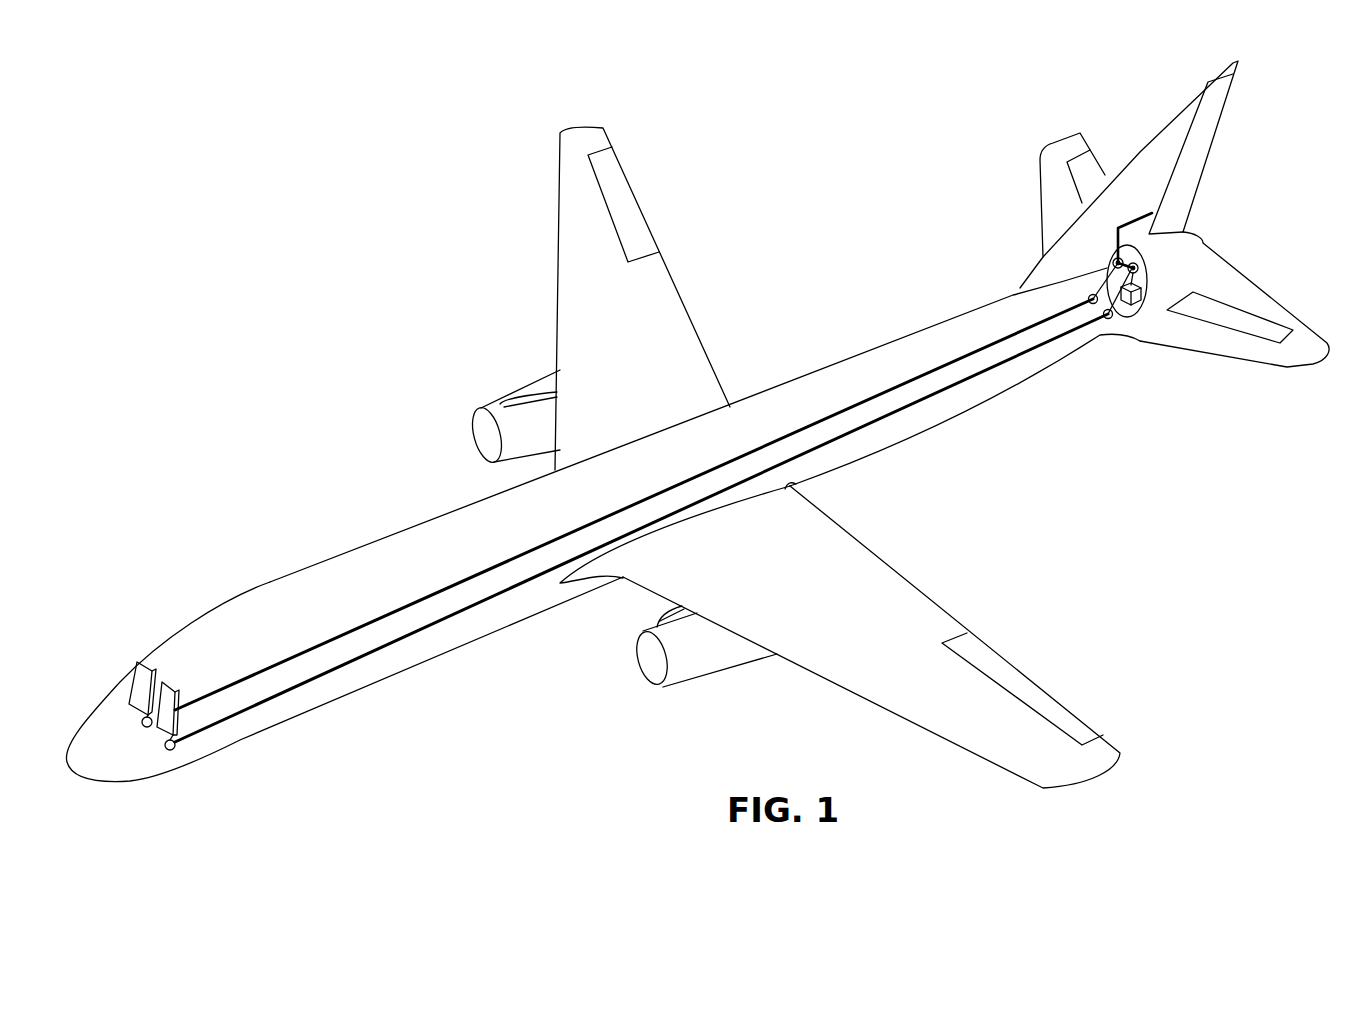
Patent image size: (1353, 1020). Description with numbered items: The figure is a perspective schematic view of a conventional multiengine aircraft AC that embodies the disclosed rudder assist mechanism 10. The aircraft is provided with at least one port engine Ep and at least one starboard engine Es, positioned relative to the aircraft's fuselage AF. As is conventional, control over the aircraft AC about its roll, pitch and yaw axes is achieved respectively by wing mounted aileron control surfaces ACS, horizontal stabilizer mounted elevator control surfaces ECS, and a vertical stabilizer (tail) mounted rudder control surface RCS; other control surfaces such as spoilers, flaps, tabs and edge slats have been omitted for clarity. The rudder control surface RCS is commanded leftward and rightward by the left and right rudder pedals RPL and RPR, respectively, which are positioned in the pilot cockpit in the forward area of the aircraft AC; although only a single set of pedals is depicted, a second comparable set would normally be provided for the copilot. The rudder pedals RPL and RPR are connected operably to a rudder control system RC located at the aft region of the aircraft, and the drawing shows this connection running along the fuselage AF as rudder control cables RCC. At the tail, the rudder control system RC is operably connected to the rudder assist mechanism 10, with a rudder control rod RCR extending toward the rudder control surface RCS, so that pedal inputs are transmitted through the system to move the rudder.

The multiengine aircraft AC is at (344, 337).
The fuselage AF is at (357, 567).
The aileron control surfaces ACS is at (622, 187).
The elevator control surfaces ECS is at (1086, 171).
The rudder control surface RCS is at (1199, 137).
The rudder control rod RCR is at (1114, 238).
The rudder control system RC is at (1088, 273).
The rudder assist mechanism 10 is at (1126, 318).
The starboard engine Es is at (540, 437).
The port engine Ep is at (712, 661).
The rudder control cables RCC is at (850, 400).
The right rudder pedal RPR is at (150, 662).
The left rudder pedal RPL is at (172, 693).